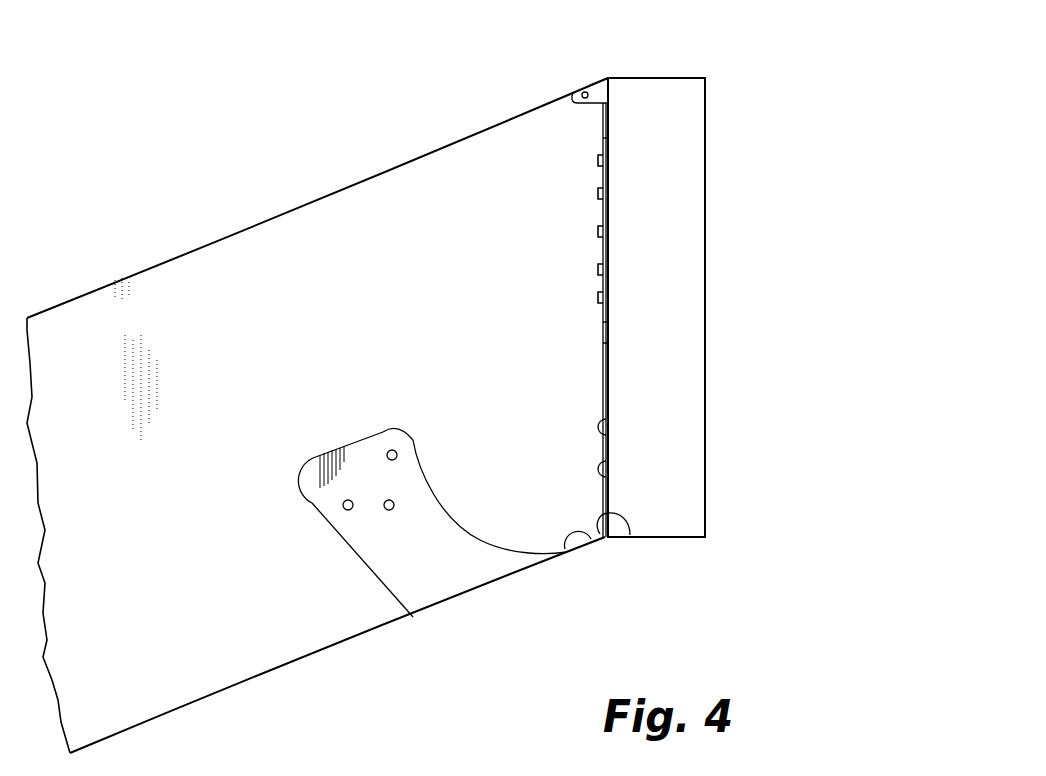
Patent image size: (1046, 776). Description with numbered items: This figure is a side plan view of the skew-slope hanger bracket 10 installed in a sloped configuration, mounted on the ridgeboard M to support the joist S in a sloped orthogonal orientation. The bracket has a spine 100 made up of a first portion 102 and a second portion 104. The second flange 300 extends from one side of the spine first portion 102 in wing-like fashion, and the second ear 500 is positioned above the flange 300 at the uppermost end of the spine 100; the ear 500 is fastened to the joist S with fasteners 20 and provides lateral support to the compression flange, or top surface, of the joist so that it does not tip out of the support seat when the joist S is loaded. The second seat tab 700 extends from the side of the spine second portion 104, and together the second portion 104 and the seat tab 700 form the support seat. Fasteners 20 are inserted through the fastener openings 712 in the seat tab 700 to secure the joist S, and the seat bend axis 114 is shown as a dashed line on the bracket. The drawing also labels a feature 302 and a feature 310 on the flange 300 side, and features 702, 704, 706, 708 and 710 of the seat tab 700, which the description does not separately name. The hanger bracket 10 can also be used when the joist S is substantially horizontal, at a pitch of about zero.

The joist S is at (337, 203).
The ridgeboard M is at (683, 124).
The second flange 300 is at (603, 183).
The tab 302 is at (600, 130).
The second ear 500 is at (594, 80).
The fasteners 20 is at (598, 160).
The strip portion 310 is at (603, 365).
The spine 100 is at (606, 419).
The first portion 102 is at (606, 477).
The second portion 104 is at (565, 549).
The seat bend axis 114 is at (630, 535).
The second seat tab 700 is at (387, 518).
The tab top edge 704 is at (347, 443).
The tab rounded corner 706 is at (405, 432).
The tab curved edge 702 is at (427, 483).
The tab bottom edge 708 is at (368, 577).
The tab rounded end 710 is at (301, 479).
The fastener openings 712 is at (390, 450).
The skew-slope hanger bracket 10 is at (480, 570).